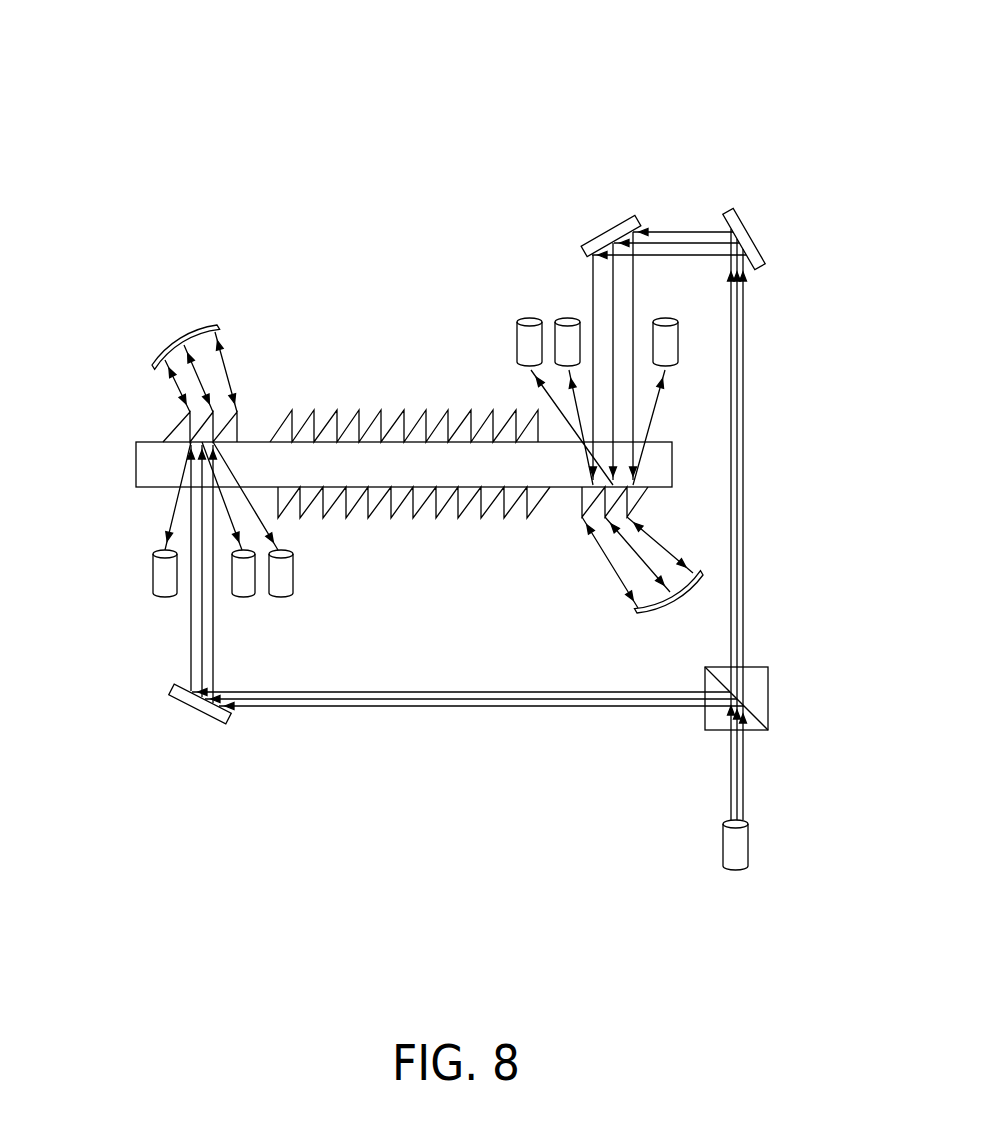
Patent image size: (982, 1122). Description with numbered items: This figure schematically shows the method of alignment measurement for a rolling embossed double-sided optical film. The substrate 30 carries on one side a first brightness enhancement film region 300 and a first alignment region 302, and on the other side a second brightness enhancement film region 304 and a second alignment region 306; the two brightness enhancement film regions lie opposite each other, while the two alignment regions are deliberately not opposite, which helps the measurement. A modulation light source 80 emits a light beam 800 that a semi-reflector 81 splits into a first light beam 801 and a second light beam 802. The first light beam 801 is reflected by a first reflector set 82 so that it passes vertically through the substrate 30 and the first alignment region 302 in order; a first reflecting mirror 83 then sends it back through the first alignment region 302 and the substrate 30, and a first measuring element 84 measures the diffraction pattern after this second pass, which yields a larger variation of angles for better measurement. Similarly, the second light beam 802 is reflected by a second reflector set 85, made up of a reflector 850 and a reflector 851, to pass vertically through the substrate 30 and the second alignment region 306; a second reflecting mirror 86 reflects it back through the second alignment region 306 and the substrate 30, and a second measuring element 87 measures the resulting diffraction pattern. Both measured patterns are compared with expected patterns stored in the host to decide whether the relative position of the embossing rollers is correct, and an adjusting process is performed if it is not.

The substrate 30 is at (136, 467).
The first brightness enhancement film region 300 is at (395, 410).
The first alignment region 302 is at (175, 430).
The second brightness enhancement film region 304 is at (397, 515).
The second alignment region 306 is at (638, 498).
The modulation light source 80 is at (750, 845).
The light beam 800 is at (745, 785).
The first light beam 801 is at (428, 706).
The second light beam 802 is at (744, 560).
The semi-reflector 81 is at (770, 690).
The first reflector set 82 is at (190, 710).
The first reflecting mirror 83 is at (160, 350).
The first measuring element 84 is at (153, 572).
The second reflector set 85 is at (673, 249).
The reflector 850 is at (752, 258).
The reflector 851 is at (622, 217).
The second reflecting mirror 86 is at (660, 613).
The second measuring element 87 is at (517, 340).